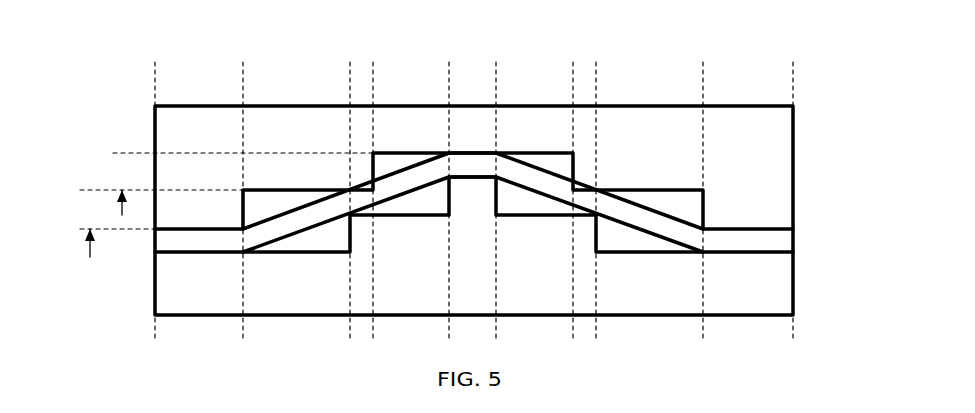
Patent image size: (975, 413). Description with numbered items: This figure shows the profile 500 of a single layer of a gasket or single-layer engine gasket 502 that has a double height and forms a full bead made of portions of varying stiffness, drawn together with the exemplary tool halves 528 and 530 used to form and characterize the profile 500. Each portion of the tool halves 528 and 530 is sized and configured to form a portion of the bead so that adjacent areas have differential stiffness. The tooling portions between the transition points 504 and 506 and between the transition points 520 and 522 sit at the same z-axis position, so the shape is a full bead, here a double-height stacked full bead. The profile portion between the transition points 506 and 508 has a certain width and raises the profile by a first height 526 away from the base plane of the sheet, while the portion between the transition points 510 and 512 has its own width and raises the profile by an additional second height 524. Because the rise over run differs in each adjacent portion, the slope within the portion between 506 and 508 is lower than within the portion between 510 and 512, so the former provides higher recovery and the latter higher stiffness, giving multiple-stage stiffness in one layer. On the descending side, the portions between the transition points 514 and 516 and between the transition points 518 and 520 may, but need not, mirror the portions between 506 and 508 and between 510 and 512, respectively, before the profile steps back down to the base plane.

The profile 500 is at (840, 143).
The single-layer engine gasket 502 is at (788, 241).
The transition point 504 is at (158, 74).
The transition point 506 is at (246, 74).
The transition point 508 is at (351, 73).
The transition point 510 is at (375, 94).
The transition point 512 is at (450, 73).
The transition point 514 is at (498, 91).
The transition point 516 is at (575, 73).
The transition point 518 is at (598, 73).
The transition point 520 is at (705, 73).
The transition point 522 is at (795, 73).
The second height 524 is at (122, 142).
The first height 526 is at (90, 179).
The tool half 528 is at (771, 148).
The tool half 530 is at (773, 299).